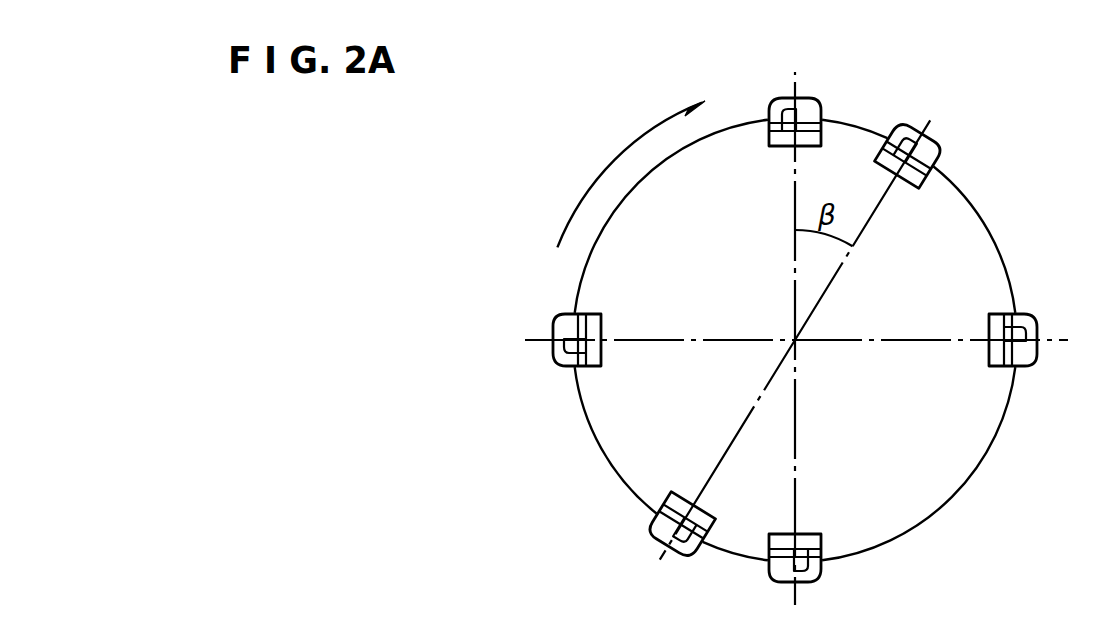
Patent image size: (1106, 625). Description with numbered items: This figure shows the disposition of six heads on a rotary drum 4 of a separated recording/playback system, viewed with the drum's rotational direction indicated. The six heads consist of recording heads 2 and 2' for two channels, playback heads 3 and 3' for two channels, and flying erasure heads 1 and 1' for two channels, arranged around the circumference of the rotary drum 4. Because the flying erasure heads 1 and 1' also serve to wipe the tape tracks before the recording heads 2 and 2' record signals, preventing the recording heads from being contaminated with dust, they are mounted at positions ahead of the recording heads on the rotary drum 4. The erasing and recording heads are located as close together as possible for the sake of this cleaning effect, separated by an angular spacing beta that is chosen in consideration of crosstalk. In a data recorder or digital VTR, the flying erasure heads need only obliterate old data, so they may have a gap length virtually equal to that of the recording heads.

The flying erasure head 1 is at (931, 150).
The flying erasure head 1' is at (680, 493).
The recording head 2 is at (795, 94).
The recording head 2' is at (814, 519).
The playback head 3 is at (592, 312).
The playback head 3' is at (1035, 309).
The rotary drum 4 is at (635, 217).